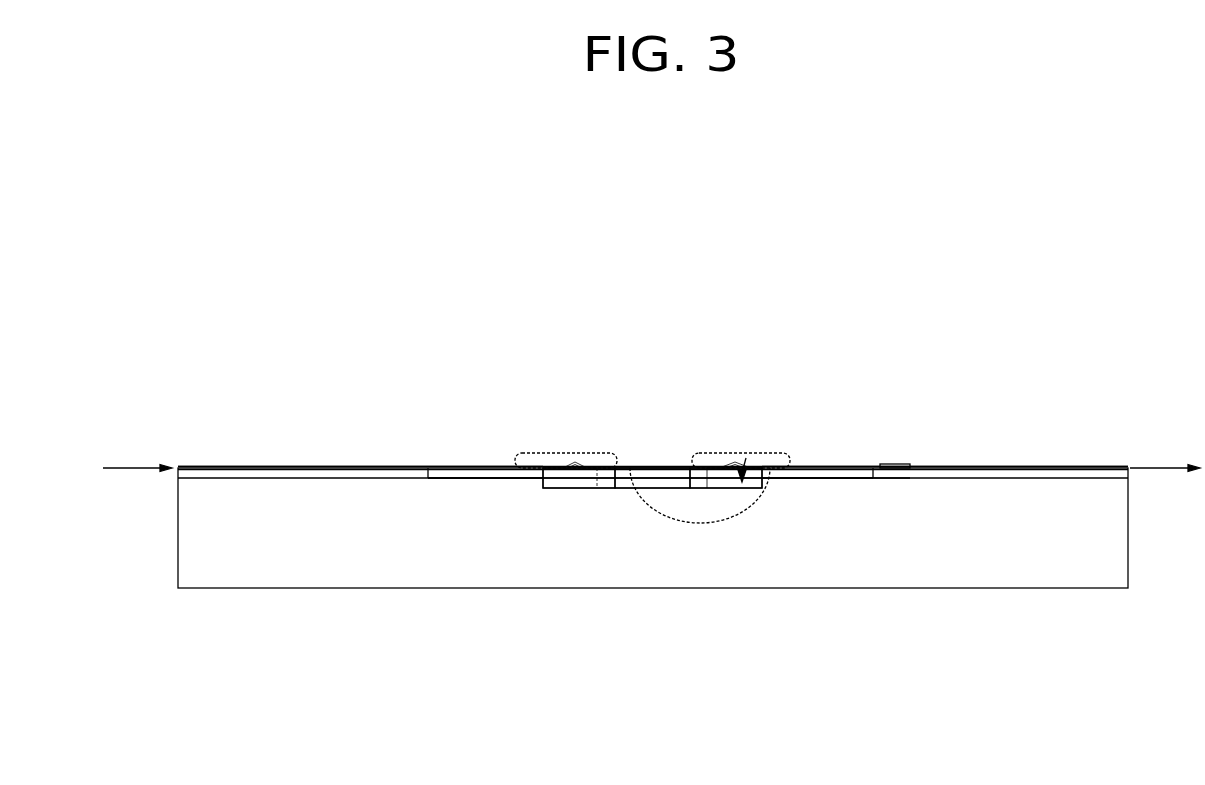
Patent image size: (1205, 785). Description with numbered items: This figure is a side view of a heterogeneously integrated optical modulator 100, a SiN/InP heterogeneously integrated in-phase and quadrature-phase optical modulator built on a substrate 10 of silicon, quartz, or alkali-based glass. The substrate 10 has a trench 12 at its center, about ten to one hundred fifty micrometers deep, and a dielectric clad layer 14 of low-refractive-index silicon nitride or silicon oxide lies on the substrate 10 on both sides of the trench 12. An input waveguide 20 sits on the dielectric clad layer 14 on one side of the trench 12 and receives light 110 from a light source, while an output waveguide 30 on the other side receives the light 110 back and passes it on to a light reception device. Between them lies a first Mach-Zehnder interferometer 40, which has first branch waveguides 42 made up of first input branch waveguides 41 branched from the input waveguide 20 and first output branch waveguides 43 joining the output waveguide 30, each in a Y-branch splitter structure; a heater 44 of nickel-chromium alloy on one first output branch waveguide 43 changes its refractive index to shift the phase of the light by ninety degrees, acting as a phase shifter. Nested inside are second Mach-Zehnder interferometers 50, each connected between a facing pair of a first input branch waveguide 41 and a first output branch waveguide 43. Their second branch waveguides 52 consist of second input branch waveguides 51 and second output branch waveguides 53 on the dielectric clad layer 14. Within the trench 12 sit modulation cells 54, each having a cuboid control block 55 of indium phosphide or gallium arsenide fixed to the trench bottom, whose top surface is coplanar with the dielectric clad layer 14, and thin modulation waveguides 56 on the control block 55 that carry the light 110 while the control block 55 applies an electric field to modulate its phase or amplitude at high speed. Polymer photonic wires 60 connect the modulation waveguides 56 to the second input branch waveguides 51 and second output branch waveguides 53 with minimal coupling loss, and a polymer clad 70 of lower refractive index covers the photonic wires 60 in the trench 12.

The substrate 10 is at (1117, 535).
The trench 12 is at (748, 458).
The dielectric clad layer 14 is at (1128, 476).
The input waveguide 20 is at (222, 466).
The output waveguide 30 is at (1065, 466).
The first Mach-Zehnder interferometer 40 is at (633, 707).
The first input branch waveguides 41 is at (428, 478).
The first branch waveguides 42 is at (853, 660).
The first output branch waveguides 43 is at (873, 478).
The heater 44 is at (895, 468).
The second Mach-Zehnder interferometers 50 is at (555, 338).
The second input branch waveguides 51 is at (523, 463).
The second branch waveguides 52 is at (628, 385).
The second output branch waveguides 53 is at (630, 466).
The modulation cells 54 is at (710, 385).
The control block 55 is at (648, 463).
The modulation waveguides 56 is at (690, 465).
The photonic wires 60 is at (727, 452).
The polymer clad 70 is at (770, 458).
The heterogeneously integrated optical modulator 100 is at (930, 285).
The light 110 is at (130, 466).